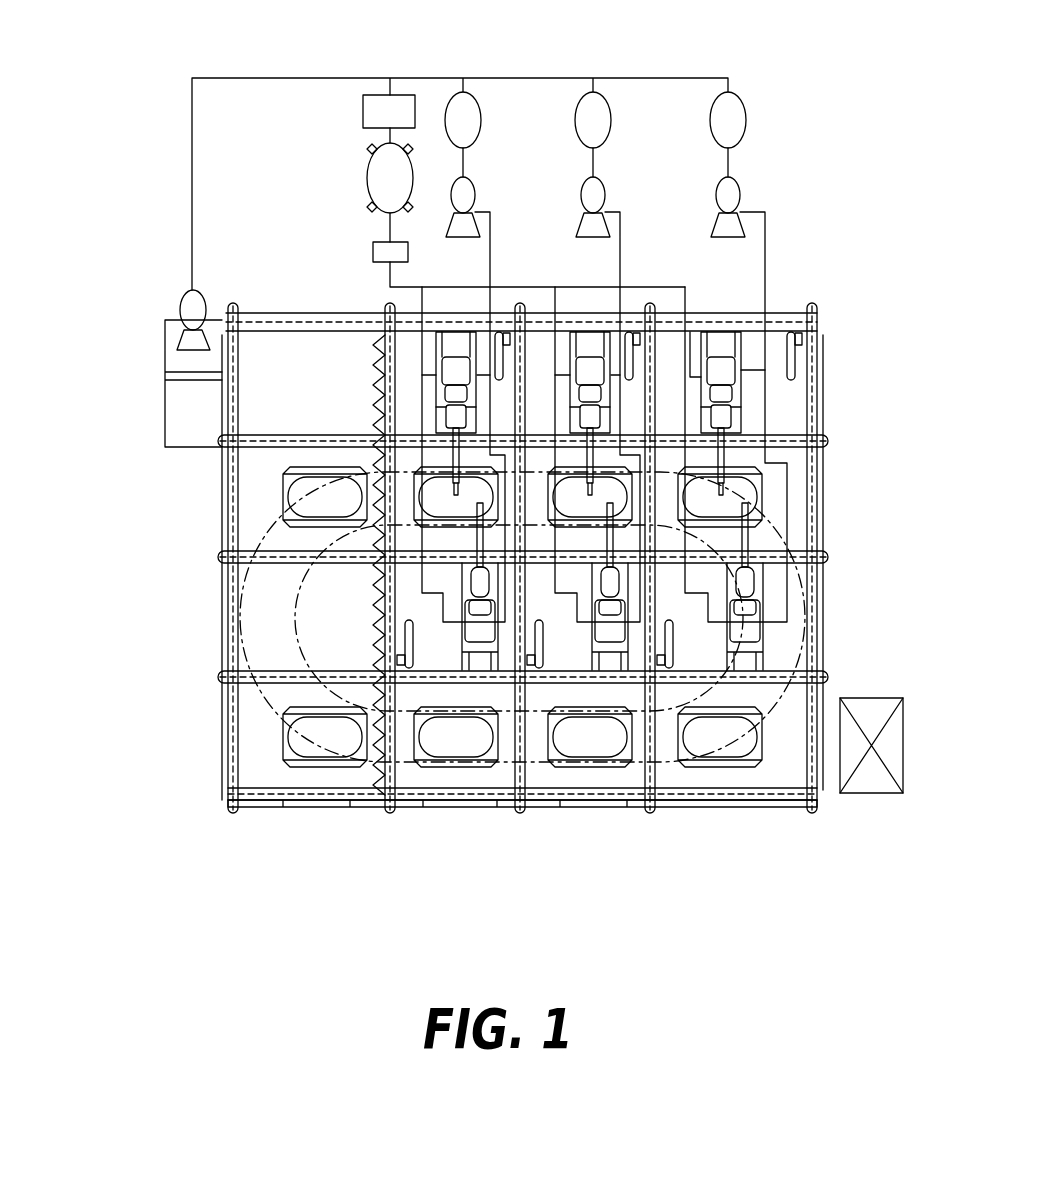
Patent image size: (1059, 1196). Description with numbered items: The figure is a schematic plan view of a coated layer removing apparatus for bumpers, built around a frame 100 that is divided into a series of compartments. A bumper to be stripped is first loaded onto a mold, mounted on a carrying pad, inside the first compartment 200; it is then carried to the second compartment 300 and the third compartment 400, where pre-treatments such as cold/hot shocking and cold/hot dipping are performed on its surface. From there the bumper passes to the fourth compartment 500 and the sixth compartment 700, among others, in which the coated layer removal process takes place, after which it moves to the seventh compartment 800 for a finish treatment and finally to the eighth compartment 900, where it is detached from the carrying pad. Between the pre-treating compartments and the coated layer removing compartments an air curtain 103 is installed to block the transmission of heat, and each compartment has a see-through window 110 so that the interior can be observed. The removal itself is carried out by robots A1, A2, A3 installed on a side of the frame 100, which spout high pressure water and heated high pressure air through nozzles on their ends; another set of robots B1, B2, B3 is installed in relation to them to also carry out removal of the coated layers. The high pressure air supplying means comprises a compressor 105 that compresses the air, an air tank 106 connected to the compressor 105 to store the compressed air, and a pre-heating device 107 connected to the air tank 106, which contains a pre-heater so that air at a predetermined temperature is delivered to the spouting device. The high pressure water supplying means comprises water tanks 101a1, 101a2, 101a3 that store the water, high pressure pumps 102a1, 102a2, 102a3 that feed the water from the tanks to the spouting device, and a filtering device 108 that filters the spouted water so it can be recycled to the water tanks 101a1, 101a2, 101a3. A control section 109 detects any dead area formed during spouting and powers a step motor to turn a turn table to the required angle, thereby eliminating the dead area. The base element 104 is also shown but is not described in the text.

The frame 100 is at (222, 765).
The water tank 101a1 is at (466, 105).
The water tank 101a2 is at (600, 100).
The water tank 101a3 is at (735, 100).
The high pressure pump 102a1 is at (470, 190).
The high pressure pump 102a2 is at (600, 190).
The high pressure pump 102a3 is at (735, 190).
The air curtain 103 is at (372, 762).
The base plate 104 is at (288, 808).
The compressor 105 is at (385, 105).
The air tank 106 is at (372, 182).
The pre-heating device 107 is at (375, 250).
The filtering device 108 is at (183, 383).
The control section 109 is at (878, 778).
The see-through window 110 is at (225, 690).
The first compartment 200 is at (422, 773).
The second compartment 300 is at (323, 773).
The third compartment 400 is at (255, 490).
The fourth compartment 500 is at (405, 355).
The sixth compartment 700 is at (795, 488).
The seventh compartment 800 is at (790, 775).
The eighth compartment 900 is at (565, 773).
The robot A1 is at (457, 362).
The robot A2 is at (590, 370).
The robot A3 is at (718, 368).
The robot B1 is at (478, 642).
The robot B2 is at (608, 642).
The robot B3 is at (745, 642).